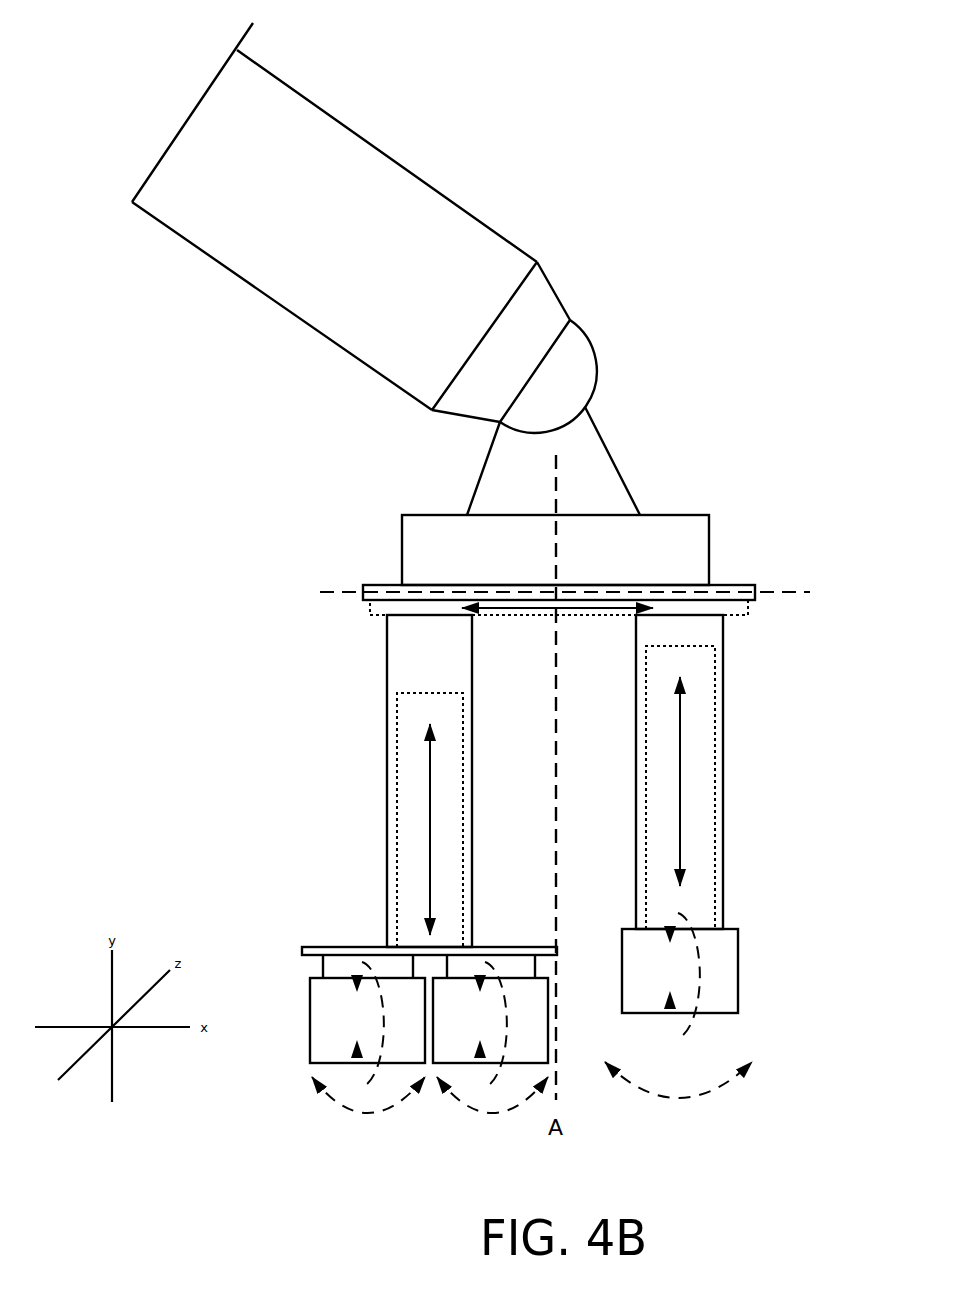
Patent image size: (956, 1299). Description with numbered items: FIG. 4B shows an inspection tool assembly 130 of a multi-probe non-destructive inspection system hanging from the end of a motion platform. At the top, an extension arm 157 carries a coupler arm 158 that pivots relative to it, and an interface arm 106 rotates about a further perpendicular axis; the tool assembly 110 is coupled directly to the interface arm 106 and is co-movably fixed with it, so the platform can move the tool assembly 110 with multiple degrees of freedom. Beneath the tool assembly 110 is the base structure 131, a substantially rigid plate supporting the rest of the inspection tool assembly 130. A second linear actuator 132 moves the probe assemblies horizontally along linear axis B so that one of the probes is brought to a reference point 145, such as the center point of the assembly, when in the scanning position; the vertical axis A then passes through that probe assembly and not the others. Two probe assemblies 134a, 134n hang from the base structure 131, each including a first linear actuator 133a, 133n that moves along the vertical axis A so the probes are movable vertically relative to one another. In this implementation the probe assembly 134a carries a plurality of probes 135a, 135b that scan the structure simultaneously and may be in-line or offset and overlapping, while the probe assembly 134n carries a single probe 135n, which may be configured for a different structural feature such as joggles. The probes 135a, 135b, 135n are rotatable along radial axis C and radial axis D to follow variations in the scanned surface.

The extension arm 157 is at (395, 165).
The coupler arm 158 is at (570, 353).
The interface arm 106 is at (597, 462).
The tool assembly 110 is at (688, 542).
The inspection tool assembly 130 is at (240, 611).
The base structure 131 is at (365, 598).
The second linear actuator 132 is at (378, 615).
The reference point 145 is at (545, 630).
The probe assembly 134a is at (371, 781).
The probe assembly 134n is at (737, 772).
The first linear actuator 133a is at (407, 760).
The first linear actuator 133n is at (705, 843).
The probe 135a is at (323, 1015).
The probe 135b is at (533, 1028).
The probe 135n is at (725, 983).